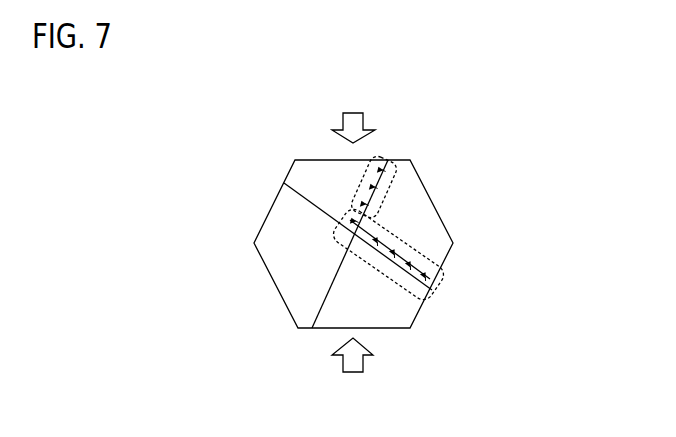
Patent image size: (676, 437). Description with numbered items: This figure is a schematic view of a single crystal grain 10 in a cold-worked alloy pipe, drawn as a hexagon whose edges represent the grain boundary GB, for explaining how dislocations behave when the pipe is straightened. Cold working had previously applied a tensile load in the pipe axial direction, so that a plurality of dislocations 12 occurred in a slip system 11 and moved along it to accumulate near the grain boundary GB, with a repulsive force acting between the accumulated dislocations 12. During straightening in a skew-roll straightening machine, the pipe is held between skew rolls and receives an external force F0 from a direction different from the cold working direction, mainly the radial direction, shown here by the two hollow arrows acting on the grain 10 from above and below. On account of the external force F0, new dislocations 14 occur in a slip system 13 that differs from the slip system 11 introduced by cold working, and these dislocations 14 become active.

The crystal grain 10 is at (450, 140).
The slip system 11 is at (303, 196).
The dislocations 12 is at (345, 229).
The slip system 13 is at (326, 312).
The dislocations 14 is at (374, 189).
The grain boundary GB is at (281, 297).
The external force F0 is at (353, 241).